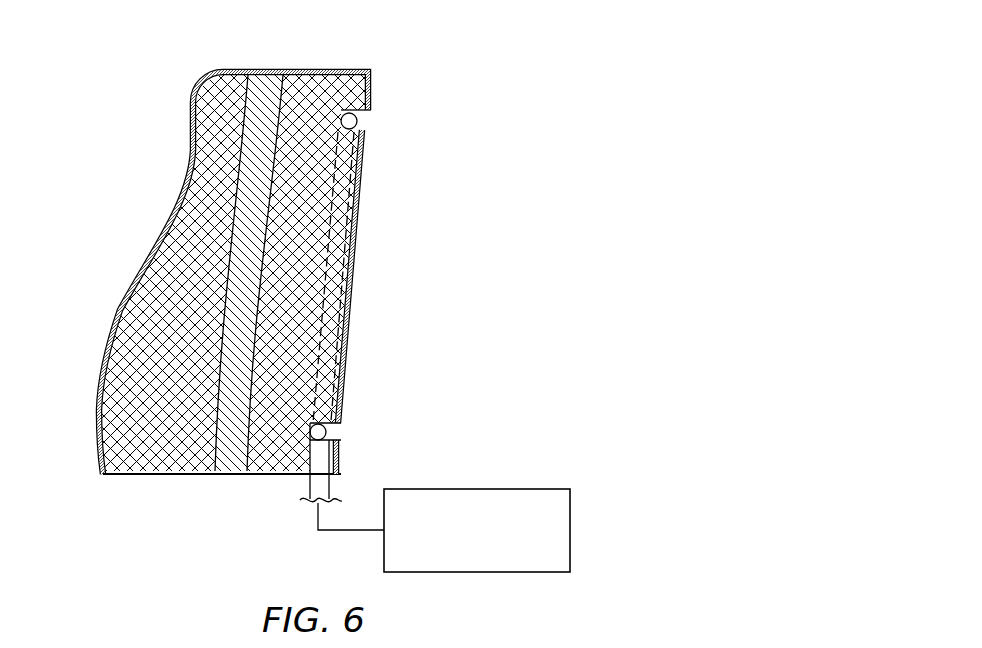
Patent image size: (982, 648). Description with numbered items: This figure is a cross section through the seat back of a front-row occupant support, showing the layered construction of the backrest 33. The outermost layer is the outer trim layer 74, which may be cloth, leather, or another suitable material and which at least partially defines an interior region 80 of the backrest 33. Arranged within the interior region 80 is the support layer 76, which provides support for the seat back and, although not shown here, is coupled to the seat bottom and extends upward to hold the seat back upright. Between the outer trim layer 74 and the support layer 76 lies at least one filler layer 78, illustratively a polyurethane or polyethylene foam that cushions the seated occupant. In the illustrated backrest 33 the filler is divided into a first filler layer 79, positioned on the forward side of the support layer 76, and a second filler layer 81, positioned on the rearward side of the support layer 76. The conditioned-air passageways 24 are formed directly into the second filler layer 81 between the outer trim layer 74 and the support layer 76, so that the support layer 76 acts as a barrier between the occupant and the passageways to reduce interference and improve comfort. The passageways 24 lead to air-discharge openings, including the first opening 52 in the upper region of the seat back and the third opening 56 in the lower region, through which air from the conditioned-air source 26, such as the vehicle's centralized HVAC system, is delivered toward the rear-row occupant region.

The backrest 33 is at (346, 289).
The interior region 80 is at (232, 84).
The support layer 76 is at (262, 92).
The outer trim layer 74 is at (322, 72).
The filler layer 78 is at (345, 87).
The first opening 52 is at (384, 113).
The first filler layer 79 is at (210, 167).
The second filler layer 81 is at (303, 202).
The conditioned-air passageways 24 is at (362, 258).
The third opening 56 is at (350, 425).
The conditioned-air source 26 is at (570, 530).